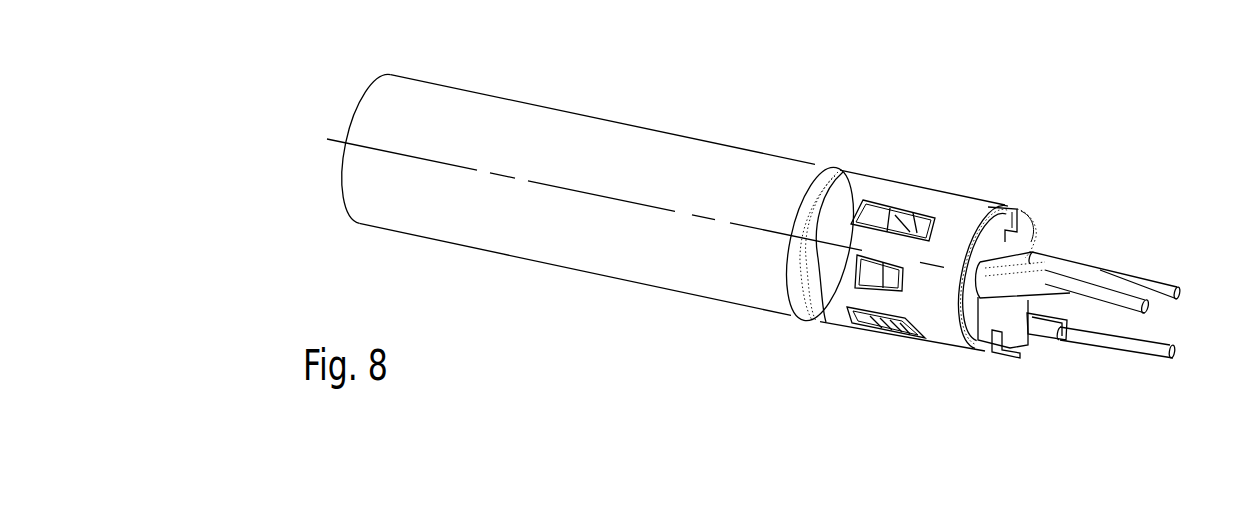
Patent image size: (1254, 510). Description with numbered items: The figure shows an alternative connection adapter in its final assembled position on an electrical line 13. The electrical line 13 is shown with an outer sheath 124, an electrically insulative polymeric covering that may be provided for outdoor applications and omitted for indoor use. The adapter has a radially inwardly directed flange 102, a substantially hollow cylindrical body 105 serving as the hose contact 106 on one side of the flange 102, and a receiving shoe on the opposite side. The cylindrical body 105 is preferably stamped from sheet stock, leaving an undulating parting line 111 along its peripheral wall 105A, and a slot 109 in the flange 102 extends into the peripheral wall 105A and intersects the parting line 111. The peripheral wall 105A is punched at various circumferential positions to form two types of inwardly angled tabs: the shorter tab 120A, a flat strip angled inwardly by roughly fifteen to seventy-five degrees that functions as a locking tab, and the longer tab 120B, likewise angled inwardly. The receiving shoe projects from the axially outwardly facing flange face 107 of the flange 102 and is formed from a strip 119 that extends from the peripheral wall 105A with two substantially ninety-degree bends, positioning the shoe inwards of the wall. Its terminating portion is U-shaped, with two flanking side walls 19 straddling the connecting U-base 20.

The electrical line 13 is at (603, 102).
The outer sheath 124 is at (680, 143).
The hose contact 106 is at (828, 323).
The undulating parting line 111 is at (932, 187).
The inwardly facing tab 120B is at (890, 202).
The inwardly facing tab 120A is at (855, 270).
The cylindrical body 105 is at (873, 336).
The peripheral wall 105A is at (938, 333).
The slot 109 is at (997, 200).
The radially inwardly directed flange 102 is at (1018, 210).
The flange face 107 is at (1036, 236).
The strip 119 is at (995, 355).
The U-base 20 is at (1057, 340).
The side walls 19 is at (1083, 317).